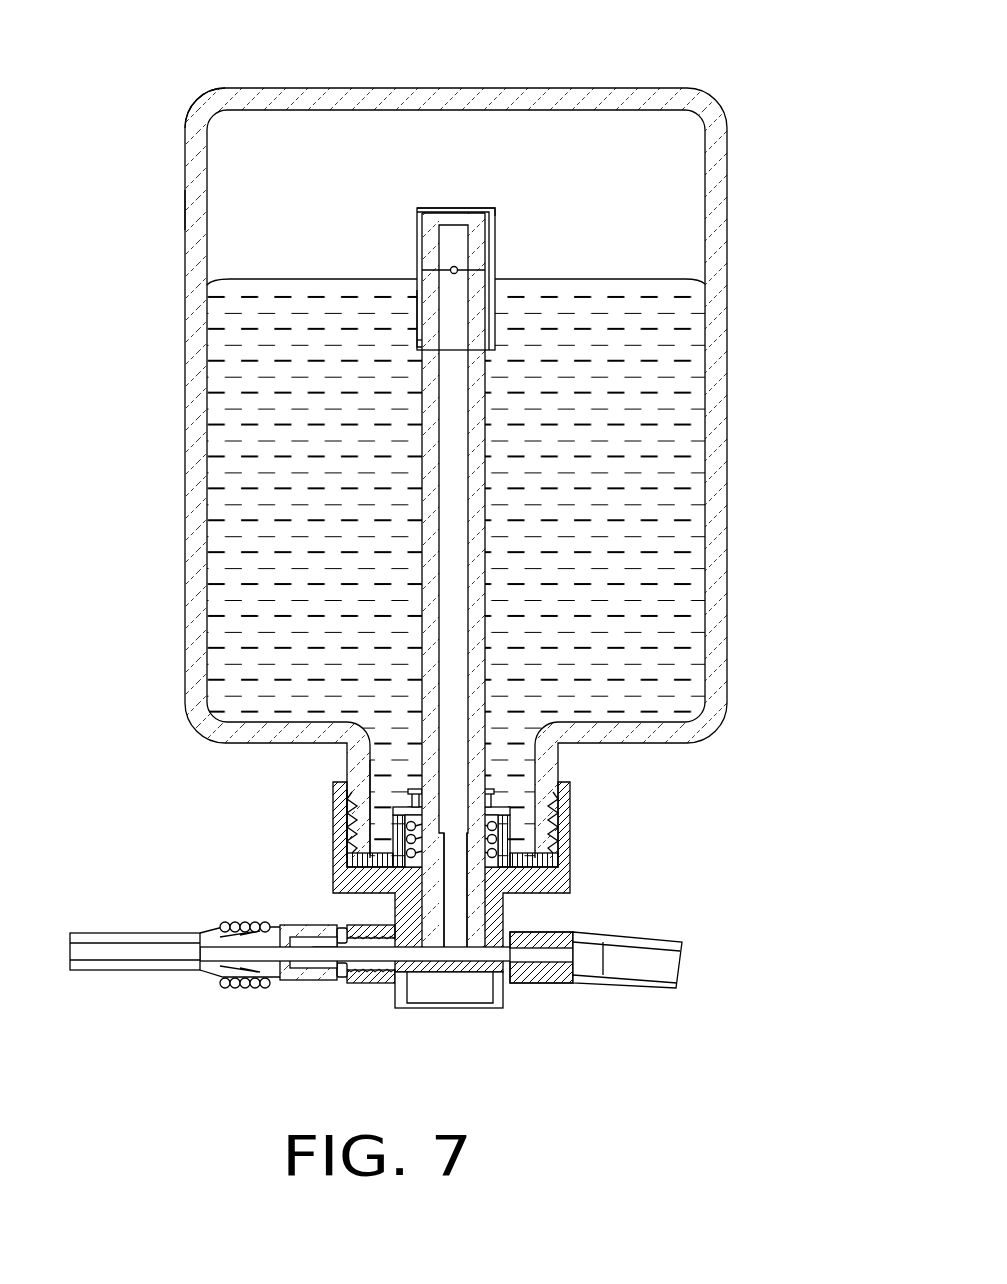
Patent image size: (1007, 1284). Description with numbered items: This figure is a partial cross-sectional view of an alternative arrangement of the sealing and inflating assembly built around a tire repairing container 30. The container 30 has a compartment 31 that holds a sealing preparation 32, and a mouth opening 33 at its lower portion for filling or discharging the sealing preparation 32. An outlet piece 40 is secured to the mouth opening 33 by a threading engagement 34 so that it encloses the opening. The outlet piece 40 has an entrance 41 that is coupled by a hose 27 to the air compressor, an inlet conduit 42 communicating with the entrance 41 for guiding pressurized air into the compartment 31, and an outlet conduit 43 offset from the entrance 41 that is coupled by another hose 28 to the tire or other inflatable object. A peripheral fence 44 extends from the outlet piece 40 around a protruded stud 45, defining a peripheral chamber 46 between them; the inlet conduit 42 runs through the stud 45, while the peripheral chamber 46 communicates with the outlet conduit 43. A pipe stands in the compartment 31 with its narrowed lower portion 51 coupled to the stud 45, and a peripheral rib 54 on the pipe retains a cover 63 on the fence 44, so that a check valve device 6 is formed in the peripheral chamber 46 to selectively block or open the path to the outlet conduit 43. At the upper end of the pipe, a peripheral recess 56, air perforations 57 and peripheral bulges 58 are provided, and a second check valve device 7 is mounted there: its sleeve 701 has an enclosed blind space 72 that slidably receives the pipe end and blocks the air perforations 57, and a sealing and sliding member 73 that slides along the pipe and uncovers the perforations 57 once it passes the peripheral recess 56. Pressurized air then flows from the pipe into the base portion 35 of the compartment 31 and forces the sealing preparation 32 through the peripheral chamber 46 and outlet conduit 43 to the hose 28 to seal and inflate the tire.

The check valve device 7 is at (495, 218).
The check valve device 6 is at (413, 845).
The hose 27 is at (140, 968).
The hose 28 is at (662, 983).
The tire repairing container 30 is at (727, 160).
The compartment 31 is at (205, 212).
The sealing preparation 32 is at (688, 310).
The mouth opening 33 is at (360, 757).
The threading engagement 34 is at (356, 801).
The base portion 35 is at (203, 98).
The outlet piece 40 is at (570, 792).
The entrance 41 is at (358, 983).
The inlet conduit 42 is at (446, 937).
The outlet conduit 43 is at (532, 957).
The peripheral fence 44 is at (503, 822).
The stud 45 is at (425, 972).
The peripheral chamber 46 is at (423, 865).
The lower portion of pipe 51 is at (470, 940).
The peripheral rib 54 is at (415, 790).
The peripheral recess 56 is at (422, 268).
The air perforation 57 is at (454, 266).
The peripheral bulge 58 is at (493, 213).
The cover 63 is at (491, 795).
The blind space 72 is at (414, 296).
The sealing and sliding member 73 is at (420, 345).
The sleeve 701 is at (496, 259).